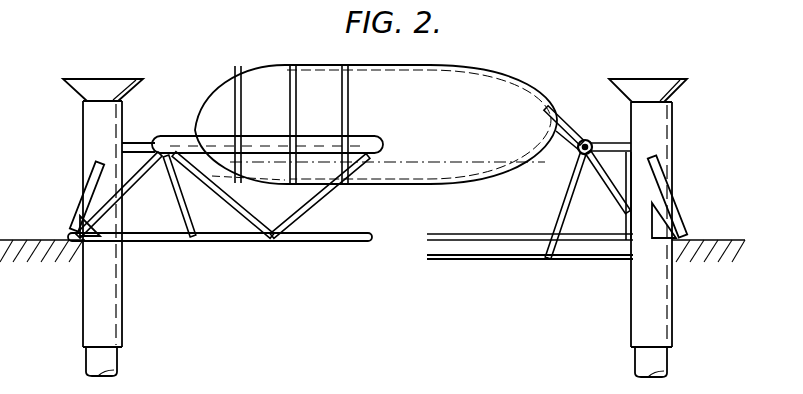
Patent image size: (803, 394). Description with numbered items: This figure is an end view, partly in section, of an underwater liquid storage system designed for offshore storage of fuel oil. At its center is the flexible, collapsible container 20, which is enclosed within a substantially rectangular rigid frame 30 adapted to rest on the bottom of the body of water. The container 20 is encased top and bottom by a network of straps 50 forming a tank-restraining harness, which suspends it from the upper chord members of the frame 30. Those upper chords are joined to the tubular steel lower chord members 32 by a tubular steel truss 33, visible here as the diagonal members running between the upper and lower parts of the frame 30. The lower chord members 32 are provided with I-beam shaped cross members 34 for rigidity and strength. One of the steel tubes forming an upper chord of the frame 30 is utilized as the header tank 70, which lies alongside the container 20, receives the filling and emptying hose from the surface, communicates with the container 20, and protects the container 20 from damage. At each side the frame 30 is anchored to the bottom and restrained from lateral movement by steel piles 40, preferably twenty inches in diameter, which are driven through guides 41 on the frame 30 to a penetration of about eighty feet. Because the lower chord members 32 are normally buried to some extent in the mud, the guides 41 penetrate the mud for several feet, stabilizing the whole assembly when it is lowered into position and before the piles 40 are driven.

The flexible, collapsible container 20 is at (502, 83).
The rigid frame 30 is at (80, 205).
The lower chord members 32 is at (300, 242).
The tubular steel truss 33 is at (318, 187).
The I-beam shaped cross members 34 is at (478, 245).
The piles 40 is at (117, 355).
The guides 41 is at (90, 128).
The network of straps 50 is at (288, 80).
The header tank 70 is at (370, 134).